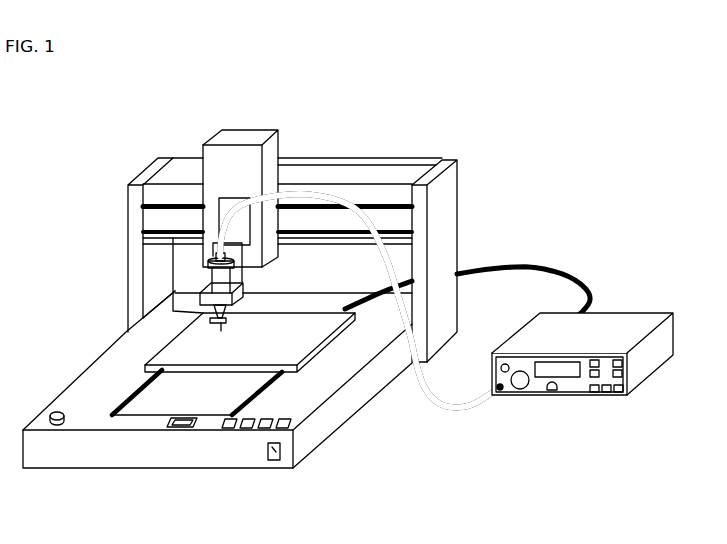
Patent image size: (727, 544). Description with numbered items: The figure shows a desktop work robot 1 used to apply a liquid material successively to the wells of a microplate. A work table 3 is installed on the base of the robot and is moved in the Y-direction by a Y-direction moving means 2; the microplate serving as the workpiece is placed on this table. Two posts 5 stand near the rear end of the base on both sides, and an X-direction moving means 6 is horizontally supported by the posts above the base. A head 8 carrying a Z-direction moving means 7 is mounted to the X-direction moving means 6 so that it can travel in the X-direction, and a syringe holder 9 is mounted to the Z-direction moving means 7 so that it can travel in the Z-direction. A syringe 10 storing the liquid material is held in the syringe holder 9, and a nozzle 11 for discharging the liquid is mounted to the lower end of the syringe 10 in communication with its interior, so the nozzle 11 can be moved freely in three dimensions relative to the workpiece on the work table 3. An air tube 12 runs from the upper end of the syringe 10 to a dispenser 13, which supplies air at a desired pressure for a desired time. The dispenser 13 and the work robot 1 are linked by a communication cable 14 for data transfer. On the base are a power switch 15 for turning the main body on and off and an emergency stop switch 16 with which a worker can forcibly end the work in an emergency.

The work robot 1 is at (316, 302).
The Y-direction moving means 2 is at (218, 398).
The work table 3 is at (180, 357).
The post 5 is at (445, 262).
The X-direction moving means 6 is at (403, 220).
The Z-direction moving means 7 is at (235, 208).
The head 8 is at (254, 119).
The syringe holder 9 is at (247, 280).
The syringe 10 is at (218, 281).
The nozzle 11 is at (215, 327).
The air tube 12 is at (484, 410).
The dispenser 13 is at (578, 330).
The communication cable 14 is at (580, 281).
The power switch 15 is at (280, 451).
The emergency stop switch 16 is at (65, 424).